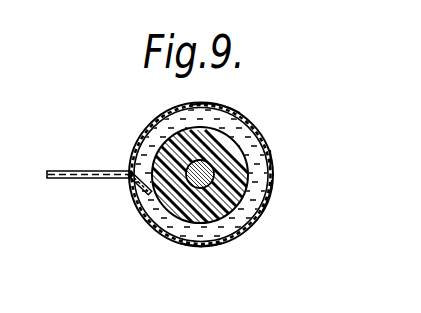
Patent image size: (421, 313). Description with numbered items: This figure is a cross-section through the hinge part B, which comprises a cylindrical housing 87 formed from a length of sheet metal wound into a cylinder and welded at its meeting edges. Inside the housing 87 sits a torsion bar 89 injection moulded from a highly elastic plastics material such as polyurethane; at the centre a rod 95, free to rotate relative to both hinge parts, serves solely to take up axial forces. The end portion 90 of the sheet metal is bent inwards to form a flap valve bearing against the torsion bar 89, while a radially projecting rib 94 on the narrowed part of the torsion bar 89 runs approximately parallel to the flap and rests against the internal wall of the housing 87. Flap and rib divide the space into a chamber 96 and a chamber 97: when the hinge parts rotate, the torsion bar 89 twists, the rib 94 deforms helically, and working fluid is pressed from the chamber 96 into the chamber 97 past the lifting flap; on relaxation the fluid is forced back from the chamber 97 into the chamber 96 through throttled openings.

The housing 87 is at (238, 234).
The torsion bar 89 is at (181, 207).
The end portion of the length of sheet metal 90 is at (134, 192).
The radially projecting rib 94 is at (267, 192).
The rod 95 is at (188, 163).
The chamber 96 is at (203, 233).
The chamber 97 is at (225, 119).
The hinge part B is at (268, 159).